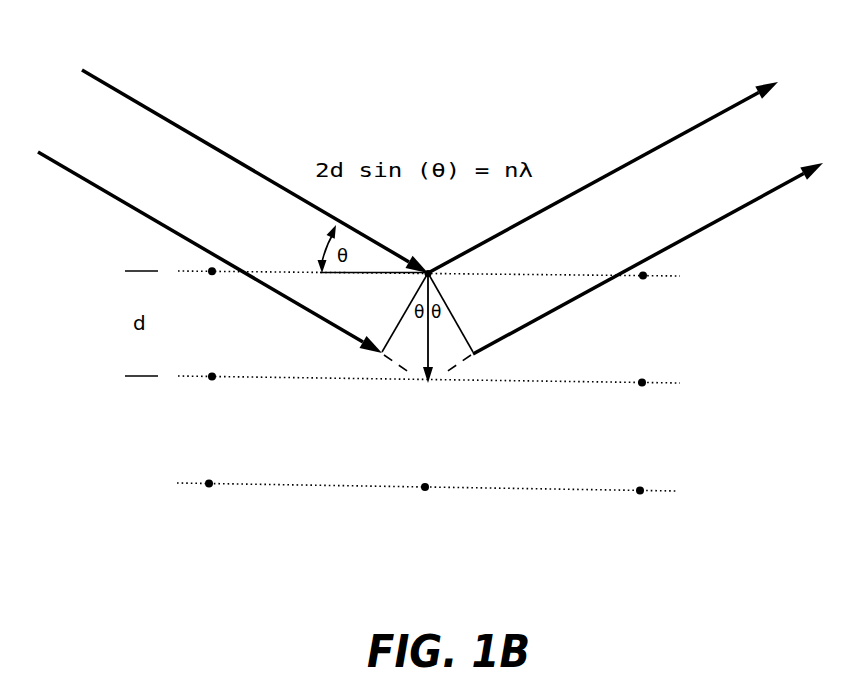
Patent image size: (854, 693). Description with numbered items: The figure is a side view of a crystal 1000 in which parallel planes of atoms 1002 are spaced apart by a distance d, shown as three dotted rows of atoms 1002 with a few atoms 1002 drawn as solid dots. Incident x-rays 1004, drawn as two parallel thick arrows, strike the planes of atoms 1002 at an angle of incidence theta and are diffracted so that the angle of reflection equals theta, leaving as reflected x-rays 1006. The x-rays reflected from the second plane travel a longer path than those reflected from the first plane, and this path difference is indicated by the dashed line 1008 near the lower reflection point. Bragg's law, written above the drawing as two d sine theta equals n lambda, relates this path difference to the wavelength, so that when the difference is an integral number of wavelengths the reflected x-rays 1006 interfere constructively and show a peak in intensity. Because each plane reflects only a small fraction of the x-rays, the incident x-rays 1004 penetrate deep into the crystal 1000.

The crystal 1000 is at (504, 524).
The atoms 1002 is at (212, 381).
The incident x-rays 1004 is at (123, 69).
The reflected x-rays 1006 is at (732, 105).
The dashed line 1008 is at (410, 366).